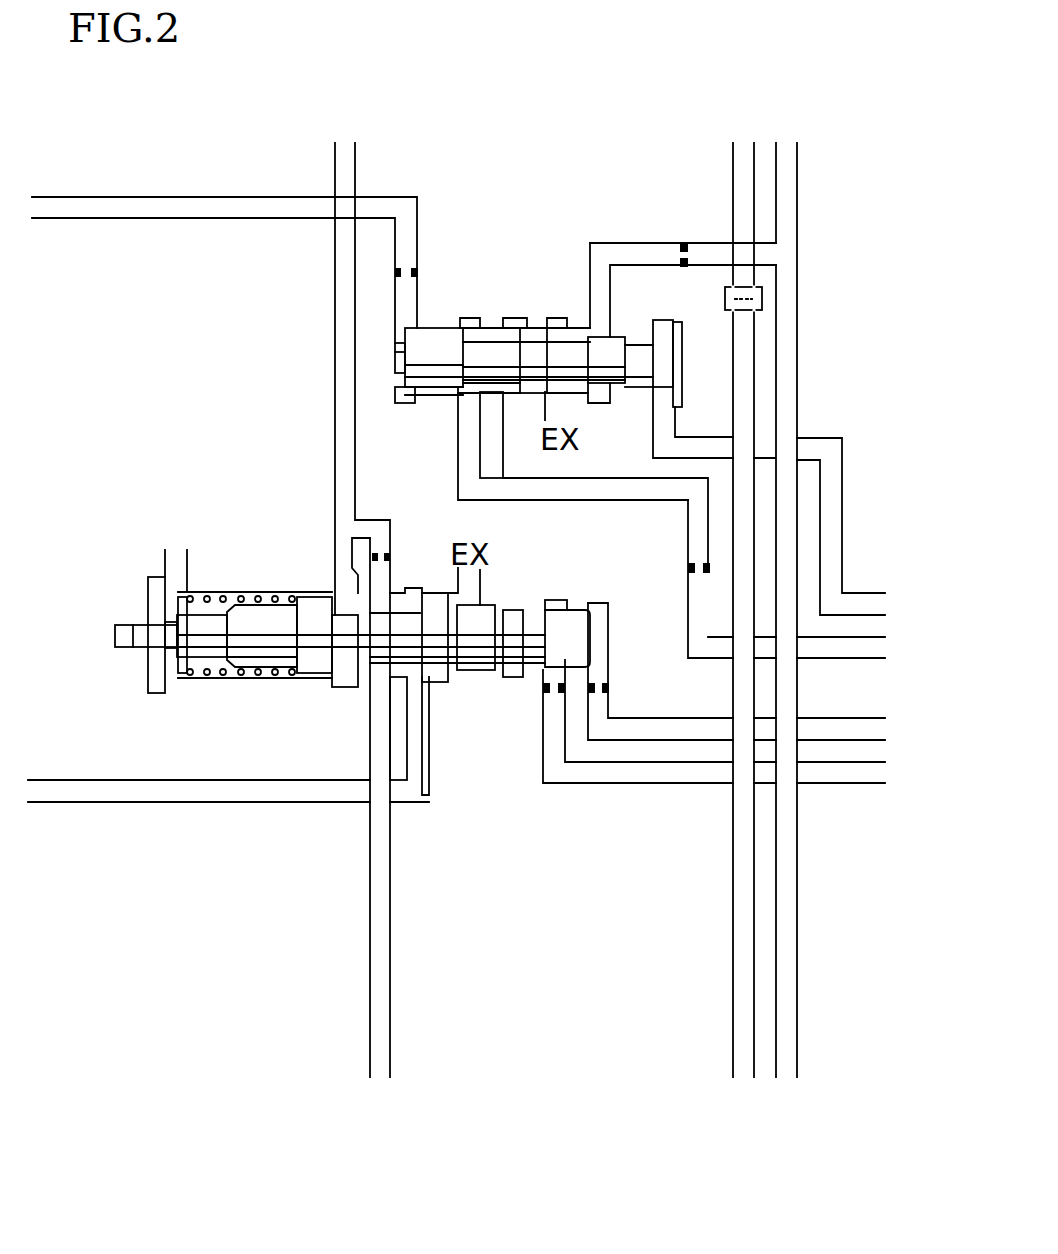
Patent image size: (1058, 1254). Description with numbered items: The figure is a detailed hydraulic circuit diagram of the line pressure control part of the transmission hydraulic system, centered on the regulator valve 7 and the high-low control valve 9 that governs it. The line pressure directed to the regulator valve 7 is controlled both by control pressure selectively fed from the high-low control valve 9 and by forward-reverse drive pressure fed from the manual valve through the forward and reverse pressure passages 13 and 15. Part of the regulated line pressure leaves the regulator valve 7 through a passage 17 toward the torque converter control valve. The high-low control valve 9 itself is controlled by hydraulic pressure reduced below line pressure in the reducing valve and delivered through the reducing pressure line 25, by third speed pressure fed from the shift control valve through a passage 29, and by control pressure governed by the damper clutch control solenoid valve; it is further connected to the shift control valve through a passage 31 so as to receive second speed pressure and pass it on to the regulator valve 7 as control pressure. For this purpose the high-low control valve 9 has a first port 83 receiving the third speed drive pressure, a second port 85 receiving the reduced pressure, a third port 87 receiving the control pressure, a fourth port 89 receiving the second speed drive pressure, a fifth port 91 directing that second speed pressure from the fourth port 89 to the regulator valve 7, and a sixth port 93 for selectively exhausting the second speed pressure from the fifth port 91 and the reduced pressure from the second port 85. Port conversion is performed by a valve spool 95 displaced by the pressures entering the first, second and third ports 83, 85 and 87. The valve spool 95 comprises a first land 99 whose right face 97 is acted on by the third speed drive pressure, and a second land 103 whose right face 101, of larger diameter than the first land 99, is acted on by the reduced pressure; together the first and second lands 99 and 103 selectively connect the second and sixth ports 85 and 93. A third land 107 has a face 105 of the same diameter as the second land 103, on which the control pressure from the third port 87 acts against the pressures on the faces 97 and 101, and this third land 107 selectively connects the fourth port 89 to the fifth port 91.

The regulator valve 7 is at (100, 635).
The high-low control valve 9 is at (517, 215).
The forward pressure passage 13 is at (568, 773).
The reverse pressure passage 15 is at (692, 732).
The passage 17 is at (335, 428).
The reducing pressure line 25 is at (638, 252).
The passage 29 is at (835, 518).
The passage 31 is at (697, 533).
The first port 83 is at (660, 392).
The second port 85 is at (602, 320).
The third port 87 is at (403, 320).
The fourth port 89 is at (468, 402).
The fifth port 91 is at (512, 403).
The sixth port 93 is at (553, 397).
The valve spool 95 is at (493, 357).
The right face 97 is at (632, 363).
The first land 99 is at (610, 348).
The right face 101 is at (550, 387).
The second land 103 is at (535, 337).
The face 105 is at (405, 387).
The third land 107 is at (435, 377).